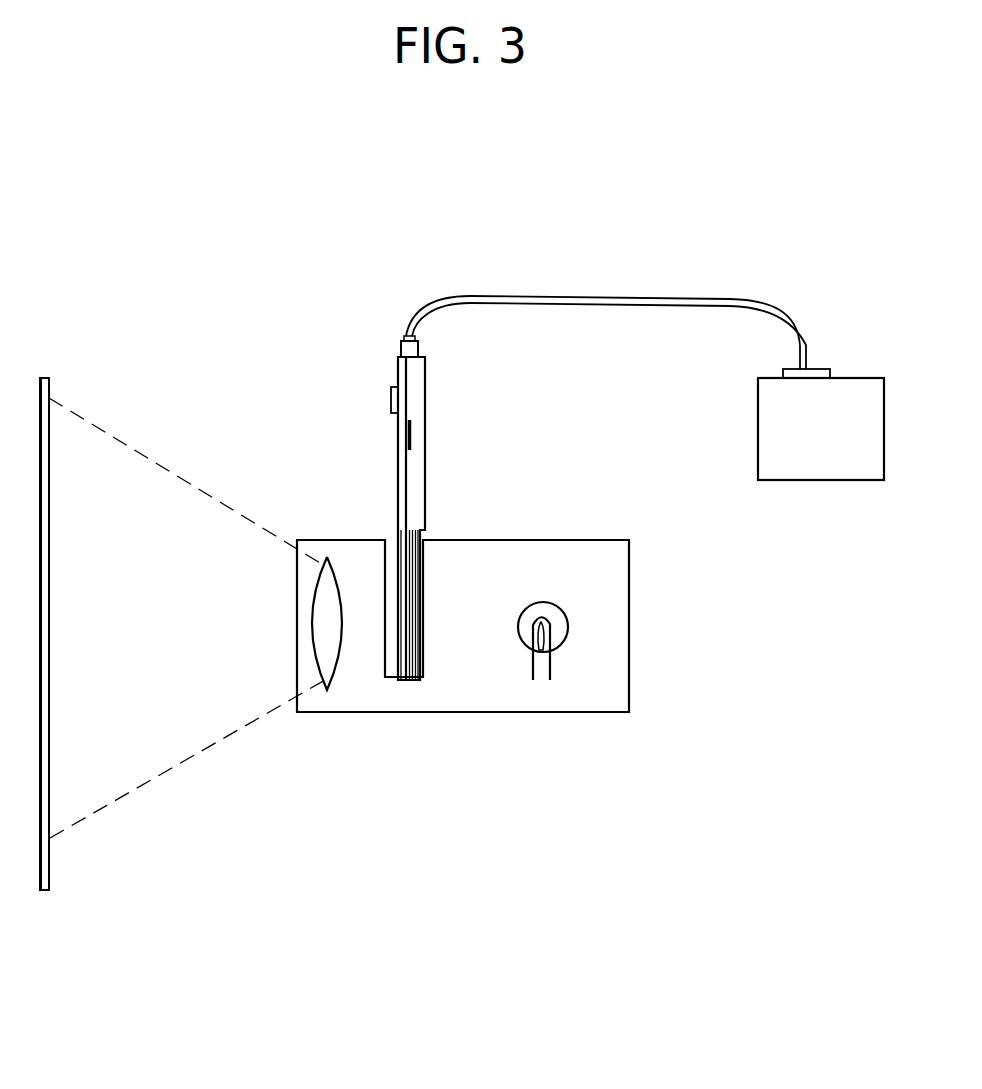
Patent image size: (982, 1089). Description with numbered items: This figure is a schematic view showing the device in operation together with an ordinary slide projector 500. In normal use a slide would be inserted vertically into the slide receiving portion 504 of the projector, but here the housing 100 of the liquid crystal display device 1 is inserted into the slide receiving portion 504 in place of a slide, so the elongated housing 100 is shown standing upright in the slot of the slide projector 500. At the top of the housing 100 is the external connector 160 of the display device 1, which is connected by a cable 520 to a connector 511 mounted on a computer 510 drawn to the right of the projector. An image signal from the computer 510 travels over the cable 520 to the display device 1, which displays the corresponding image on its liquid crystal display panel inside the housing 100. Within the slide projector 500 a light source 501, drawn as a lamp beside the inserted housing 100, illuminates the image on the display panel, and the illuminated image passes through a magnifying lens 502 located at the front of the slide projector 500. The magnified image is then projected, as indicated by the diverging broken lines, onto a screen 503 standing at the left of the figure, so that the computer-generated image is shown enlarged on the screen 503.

The liquid crystal display device 1 is at (430, 457).
The housing 100 is at (430, 384).
The external connector 160 is at (404, 340).
The slide projector 500 is at (583, 540).
The light source 501 is at (560, 627).
The magnifying lens 502 is at (333, 672).
The screen 503 is at (49, 380).
The slide receiving portion 504 is at (428, 612).
The computer 510 is at (815, 481).
The connector 511 is at (826, 368).
The cable 520 is at (745, 300).